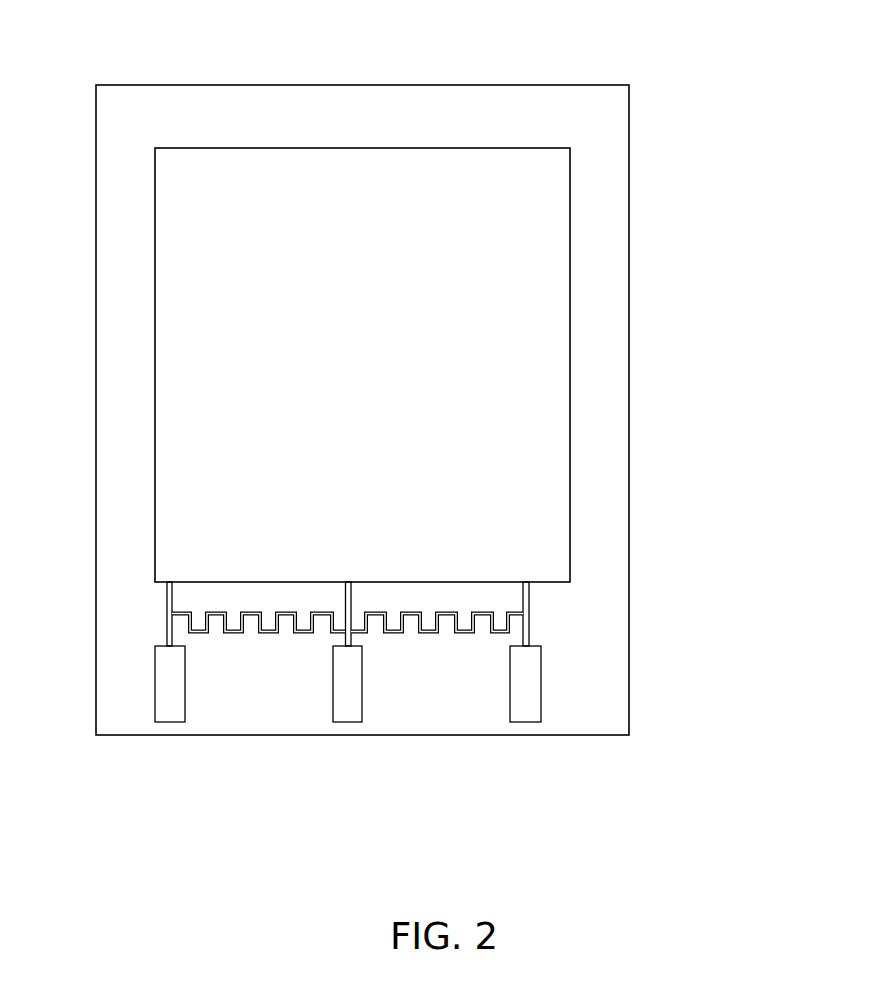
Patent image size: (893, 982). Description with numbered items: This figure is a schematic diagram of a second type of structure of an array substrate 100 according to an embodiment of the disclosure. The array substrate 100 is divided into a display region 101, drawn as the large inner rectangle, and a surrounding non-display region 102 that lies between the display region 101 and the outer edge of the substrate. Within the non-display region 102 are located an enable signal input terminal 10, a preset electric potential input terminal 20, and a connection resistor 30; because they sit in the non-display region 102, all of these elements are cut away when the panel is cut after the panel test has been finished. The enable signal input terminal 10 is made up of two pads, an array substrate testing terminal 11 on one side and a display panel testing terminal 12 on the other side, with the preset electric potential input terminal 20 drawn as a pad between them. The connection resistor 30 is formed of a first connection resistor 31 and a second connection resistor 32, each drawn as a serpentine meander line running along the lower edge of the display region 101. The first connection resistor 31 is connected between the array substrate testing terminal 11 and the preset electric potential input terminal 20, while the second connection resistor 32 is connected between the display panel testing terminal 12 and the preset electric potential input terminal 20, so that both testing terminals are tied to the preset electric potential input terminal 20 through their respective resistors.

The array substrate 100 is at (70, 27).
The display region 101 is at (540, 380).
The non-display region 102 is at (569, 635).
The enable signal input terminal 10 is at (473, 746).
The array substrate testing terminal 11 is at (169, 691).
The display panel testing terminal 12 is at (525, 688).
The preset electric potential input terminal 20 is at (348, 688).
The connection resistor 30 is at (482, 731).
The first connection resistor 31 is at (245, 631).
The second connection resistor 32 is at (442, 633).